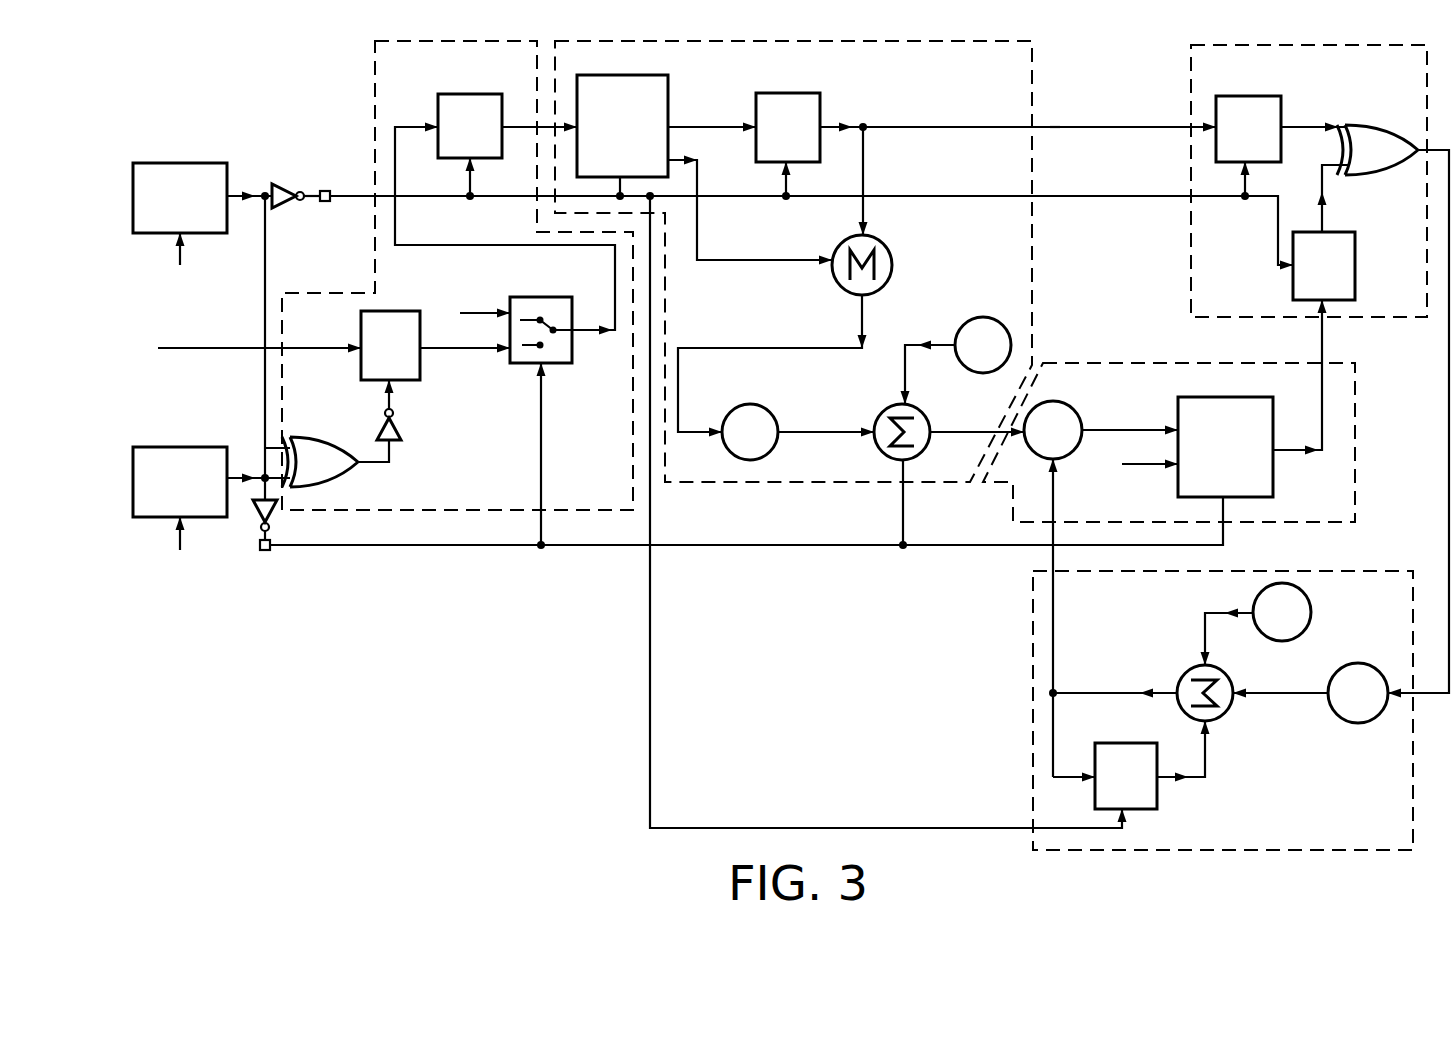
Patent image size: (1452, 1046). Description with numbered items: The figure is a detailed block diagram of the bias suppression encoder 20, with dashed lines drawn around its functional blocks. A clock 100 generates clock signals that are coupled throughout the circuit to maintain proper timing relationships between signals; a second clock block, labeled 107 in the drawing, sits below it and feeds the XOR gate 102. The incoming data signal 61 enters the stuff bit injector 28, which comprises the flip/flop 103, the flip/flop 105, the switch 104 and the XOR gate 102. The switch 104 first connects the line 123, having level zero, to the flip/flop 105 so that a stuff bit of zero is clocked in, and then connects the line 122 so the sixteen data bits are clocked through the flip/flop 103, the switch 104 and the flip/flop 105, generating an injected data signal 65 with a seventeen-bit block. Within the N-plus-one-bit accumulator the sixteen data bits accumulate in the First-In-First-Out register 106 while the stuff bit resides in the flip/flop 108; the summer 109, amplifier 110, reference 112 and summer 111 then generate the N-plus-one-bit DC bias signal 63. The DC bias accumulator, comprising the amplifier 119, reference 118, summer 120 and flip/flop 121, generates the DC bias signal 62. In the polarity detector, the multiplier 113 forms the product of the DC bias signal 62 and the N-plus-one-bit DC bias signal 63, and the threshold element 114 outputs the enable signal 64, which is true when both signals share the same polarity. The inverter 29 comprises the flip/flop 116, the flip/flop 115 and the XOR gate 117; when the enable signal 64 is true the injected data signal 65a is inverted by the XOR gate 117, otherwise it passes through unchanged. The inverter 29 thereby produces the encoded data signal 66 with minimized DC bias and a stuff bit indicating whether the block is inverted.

The bias suppression encoder 20 is at (628, 674).
The stuff bit injector 28 is at (405, 43).
The inverter 29 is at (1215, 45).
The data signal 61 is at (215, 348).
The DC bias signal 62 is at (1055, 615).
The (N+1)-bit DC bias signal 63 is at (968, 445).
The enable signal 64 is at (1322, 333).
The injected data signal 65 is at (547, 60).
The injected data signal 65a is at (1060, 125).
The encoded data signal 66 is at (1450, 450).
The clock 100 is at (170, 163).
The XOR gate 102 is at (347, 478).
The flip/flop 103 is at (390, 311).
The switch 104 is at (553, 363).
The flip/flop 105 is at (465, 94).
The First-In-First-Out register 106 is at (668, 95).
The 16BitSum signal 107 is at (155, 517).
The flip/flop 108 is at (810, 93).
The summer 109 is at (875, 241).
The amplifier 110 is at (760, 404).
The summer 111 is at (892, 405).
The reference 112 is at (992, 318).
The multiplier 113 is at (1078, 411).
The threshold element 114 is at (1178, 475).
The flip/flop 115 is at (1250, 96).
The flip/flop 116 is at (1355, 262).
The XOR gate 117 is at (1368, 125).
The reference 118 is at (1310, 605).
The amplifier 119 is at (1352, 723).
The summer 120 is at (1178, 705).
The flip/flop 121 is at (1157, 800).
The line 122 is at (455, 348).
The line 123 is at (480, 310).